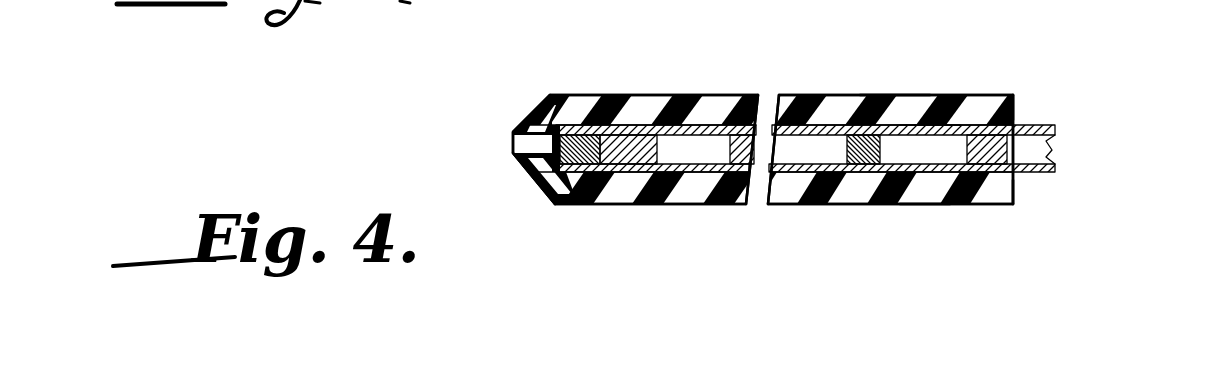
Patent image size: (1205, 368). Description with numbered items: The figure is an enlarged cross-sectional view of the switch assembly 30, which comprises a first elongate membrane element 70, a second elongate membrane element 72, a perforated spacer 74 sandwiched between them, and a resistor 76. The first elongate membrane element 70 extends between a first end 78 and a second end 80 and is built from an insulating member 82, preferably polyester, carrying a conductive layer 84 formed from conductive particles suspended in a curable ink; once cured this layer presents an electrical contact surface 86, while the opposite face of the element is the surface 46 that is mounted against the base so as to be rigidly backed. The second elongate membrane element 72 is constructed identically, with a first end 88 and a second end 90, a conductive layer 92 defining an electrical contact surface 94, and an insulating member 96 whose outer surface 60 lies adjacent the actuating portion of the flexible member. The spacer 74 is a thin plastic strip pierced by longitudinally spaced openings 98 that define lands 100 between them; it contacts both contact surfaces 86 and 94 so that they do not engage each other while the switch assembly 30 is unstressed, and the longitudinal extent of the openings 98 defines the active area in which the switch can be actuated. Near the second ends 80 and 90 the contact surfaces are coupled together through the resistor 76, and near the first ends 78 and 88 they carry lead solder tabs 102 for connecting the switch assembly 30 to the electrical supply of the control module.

The switch assembly 30 is at (939, 36).
The surface opposing the contact surface 46 is at (703, 96).
The surface opposing the electrical contact surface 60 is at (735, 205).
The first elongate membrane element 70 is at (1010, 93).
The second elongate membrane element 72 is at (809, 212).
The perforated spacer 74 is at (638, 125).
The resistor 76 is at (588, 126).
The first end 78 is at (1017, 110).
The second end 80 is at (515, 130).
The insulating member 82 is at (890, 98).
The conductive layer 84 is at (757, 92).
The electrical contact surface 86 is at (912, 143).
The first end 88 is at (1013, 196).
The second end 90 is at (518, 172).
The conductive layer 92 is at (686, 166).
The electrical contact surface 94 is at (952, 170).
The insulating member 96 is at (930, 173).
The openings 98 is at (841, 142).
The lands 100 is at (608, 150).
The lead solder tabs 102 is at (1055, 142).